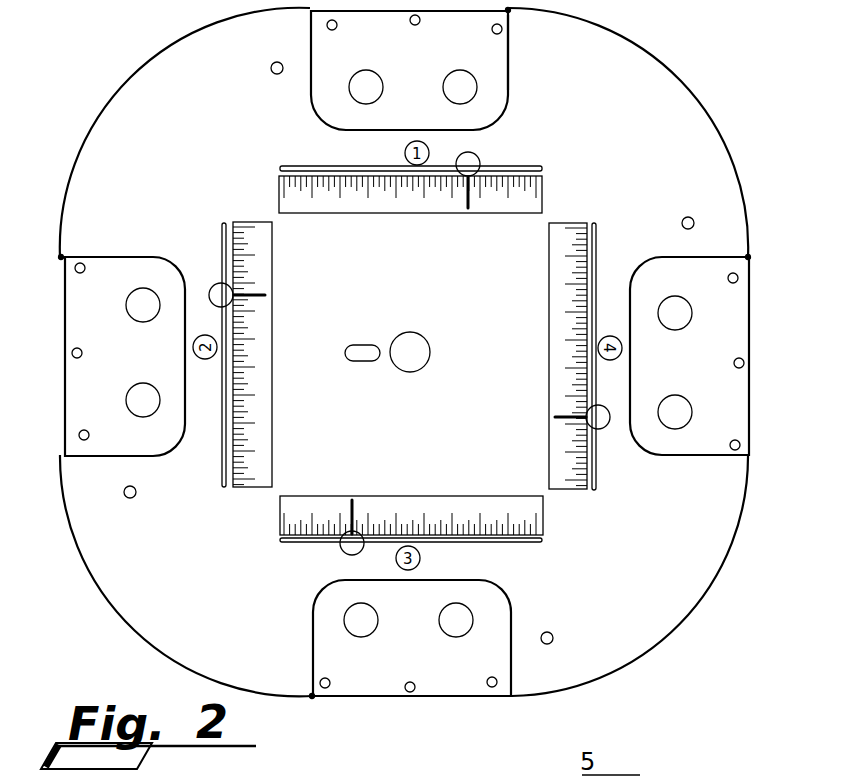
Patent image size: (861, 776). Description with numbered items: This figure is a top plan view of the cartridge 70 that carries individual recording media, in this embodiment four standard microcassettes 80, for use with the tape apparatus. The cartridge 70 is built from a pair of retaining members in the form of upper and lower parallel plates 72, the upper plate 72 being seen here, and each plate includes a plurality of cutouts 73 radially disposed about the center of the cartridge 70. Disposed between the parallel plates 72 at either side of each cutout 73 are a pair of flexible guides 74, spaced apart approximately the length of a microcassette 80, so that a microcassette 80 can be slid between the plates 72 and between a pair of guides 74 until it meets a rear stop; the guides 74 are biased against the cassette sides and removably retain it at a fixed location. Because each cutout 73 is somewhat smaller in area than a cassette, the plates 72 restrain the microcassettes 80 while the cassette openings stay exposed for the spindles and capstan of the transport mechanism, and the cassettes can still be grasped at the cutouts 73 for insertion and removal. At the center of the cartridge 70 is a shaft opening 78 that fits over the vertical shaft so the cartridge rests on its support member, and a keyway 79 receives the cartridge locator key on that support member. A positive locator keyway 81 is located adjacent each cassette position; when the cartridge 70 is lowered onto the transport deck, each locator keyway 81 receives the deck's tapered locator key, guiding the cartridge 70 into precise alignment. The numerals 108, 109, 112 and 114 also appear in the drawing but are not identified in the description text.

The cartridge 70 is at (112, 600).
The upper parallel plate 72 is at (163, 58).
The cutout 73 is at (508, 45).
The flexible guide 74 is at (61, 260).
The shaft opening 78 is at (414, 346).
The keyway 79 is at (364, 345).
The microcassette 80 is at (431, 57).
The positive locator keyway 81 is at (272, 68).
The pointer 108 is at (470, 207).
The knob 109 is at (479, 160).
The guide bar 112 is at (323, 165).
The scale 114 is at (382, 206).